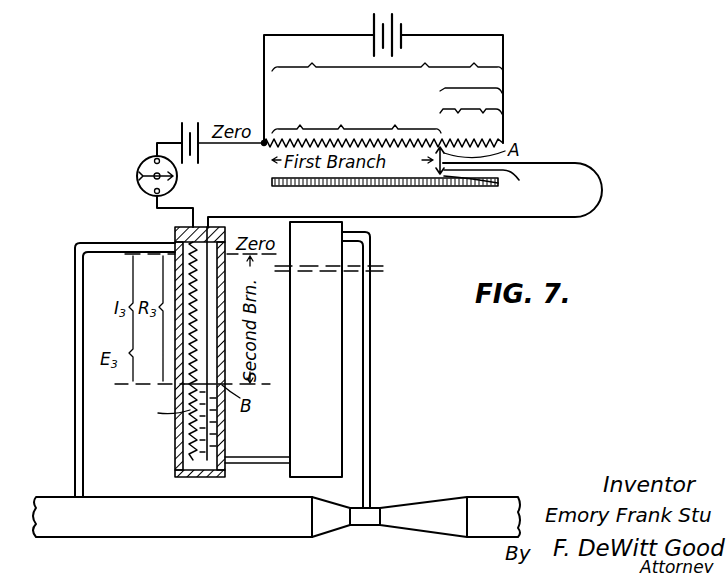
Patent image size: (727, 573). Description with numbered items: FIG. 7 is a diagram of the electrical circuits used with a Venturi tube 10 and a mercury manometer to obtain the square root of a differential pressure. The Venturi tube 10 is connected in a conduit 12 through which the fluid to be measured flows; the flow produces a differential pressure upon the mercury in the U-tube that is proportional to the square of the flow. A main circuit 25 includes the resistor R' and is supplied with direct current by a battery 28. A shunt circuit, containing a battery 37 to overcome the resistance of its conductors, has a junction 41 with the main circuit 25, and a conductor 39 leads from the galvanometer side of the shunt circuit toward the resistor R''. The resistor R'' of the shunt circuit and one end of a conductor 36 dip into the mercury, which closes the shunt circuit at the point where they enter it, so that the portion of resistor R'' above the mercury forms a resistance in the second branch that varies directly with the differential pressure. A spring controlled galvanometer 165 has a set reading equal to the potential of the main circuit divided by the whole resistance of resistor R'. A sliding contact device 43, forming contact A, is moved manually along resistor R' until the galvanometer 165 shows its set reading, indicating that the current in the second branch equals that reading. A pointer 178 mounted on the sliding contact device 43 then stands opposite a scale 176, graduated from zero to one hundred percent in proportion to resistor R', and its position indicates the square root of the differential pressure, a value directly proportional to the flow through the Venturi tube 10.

The main circuit 25 is at (503, 36).
The battery 28 is at (370, 33).
The battery 37 is at (180, 133).
The spring controlled galvanometer 165 is at (139, 168).
The junction 41 is at (262, 146).
The conductor to resistance cell 39 is at (178, 210).
The conductor 36 is at (262, 216).
The sliding contact device 43 is at (494, 183).
The scale 176 is at (474, 187).
The pointer 178 is at (498, 183).
The Venturi tube 10 is at (393, 504).
The conduit 12 is at (216, 537).